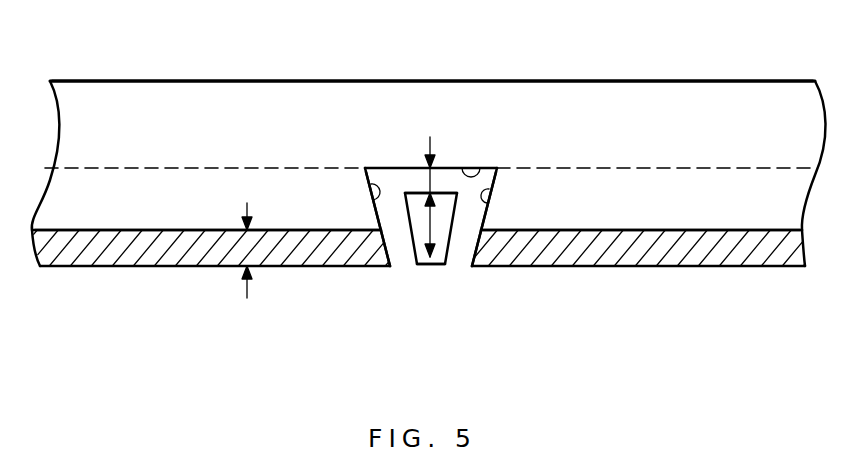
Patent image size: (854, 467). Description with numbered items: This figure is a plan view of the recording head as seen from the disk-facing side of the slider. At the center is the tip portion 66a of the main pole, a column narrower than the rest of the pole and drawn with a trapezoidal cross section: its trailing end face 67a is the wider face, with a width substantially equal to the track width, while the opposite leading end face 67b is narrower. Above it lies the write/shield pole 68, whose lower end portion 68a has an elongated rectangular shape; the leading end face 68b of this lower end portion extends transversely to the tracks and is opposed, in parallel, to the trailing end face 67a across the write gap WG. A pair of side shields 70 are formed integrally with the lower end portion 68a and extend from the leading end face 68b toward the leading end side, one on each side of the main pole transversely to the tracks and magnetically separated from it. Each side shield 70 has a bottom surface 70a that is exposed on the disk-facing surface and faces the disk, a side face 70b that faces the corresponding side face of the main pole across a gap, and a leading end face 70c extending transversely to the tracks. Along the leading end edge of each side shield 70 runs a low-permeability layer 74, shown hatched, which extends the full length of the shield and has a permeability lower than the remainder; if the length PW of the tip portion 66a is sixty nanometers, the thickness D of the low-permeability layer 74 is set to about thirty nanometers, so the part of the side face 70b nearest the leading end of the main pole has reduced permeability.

The write/shield pole 68 is at (757, 92).
The lower end portion 68a is at (168, 92).
The leading end face 68b is at (487, 176).
The side shield 70 is at (187, 208).
The bottom surface 70a is at (70, 207).
The side face 70b is at (374, 202).
The leading end face 70c is at (267, 268).
The low-permeability layer 74 is at (133, 248).
The tip portion 66a is at (418, 240).
The trailing end face 67a is at (412, 191).
The leading end face 67b is at (428, 265).
The write gap WG is at (433, 180).
The length of the tip portion PW is at (436, 230).
The thickness of the low-permeability layer D is at (234, 250).